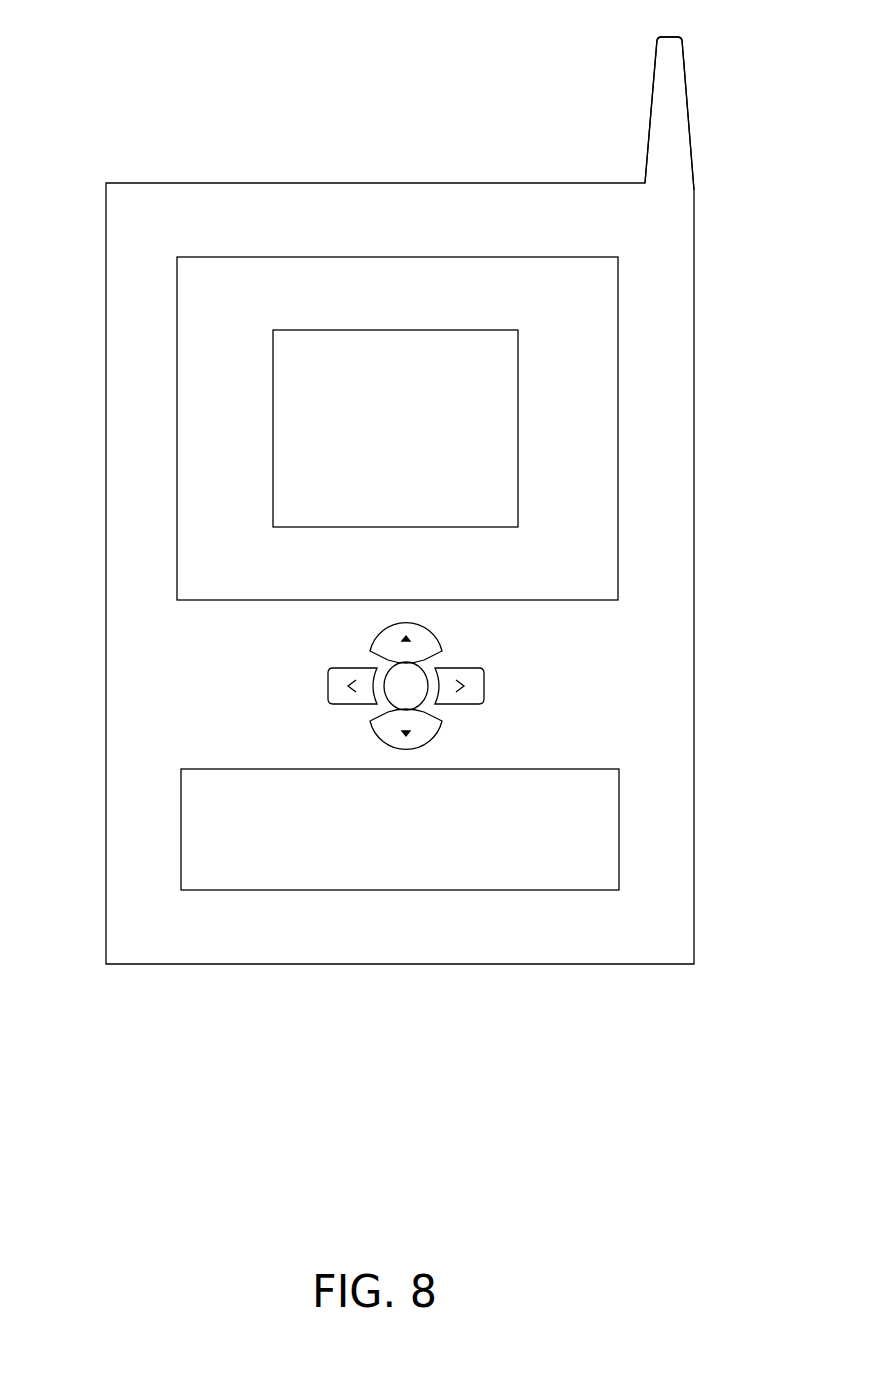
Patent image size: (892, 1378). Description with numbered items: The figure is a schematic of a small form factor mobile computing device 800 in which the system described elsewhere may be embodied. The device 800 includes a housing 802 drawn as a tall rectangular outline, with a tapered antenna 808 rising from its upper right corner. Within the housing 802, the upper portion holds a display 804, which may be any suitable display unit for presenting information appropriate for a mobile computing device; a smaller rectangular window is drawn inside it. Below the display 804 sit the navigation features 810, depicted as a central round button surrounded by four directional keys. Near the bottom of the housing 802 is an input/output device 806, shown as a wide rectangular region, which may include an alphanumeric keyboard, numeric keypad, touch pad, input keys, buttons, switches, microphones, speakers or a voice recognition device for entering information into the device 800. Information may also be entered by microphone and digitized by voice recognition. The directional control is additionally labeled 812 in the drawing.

The device 800 is at (393, 1256).
The housing 802 is at (694, 555).
The display 804 is at (553, 257).
The input/output (I/O) device 806 is at (619, 800).
The antenna 808 is at (655, 88).
The navigation features 810 is at (458, 330).
The navigation control 812 is at (493, 676).